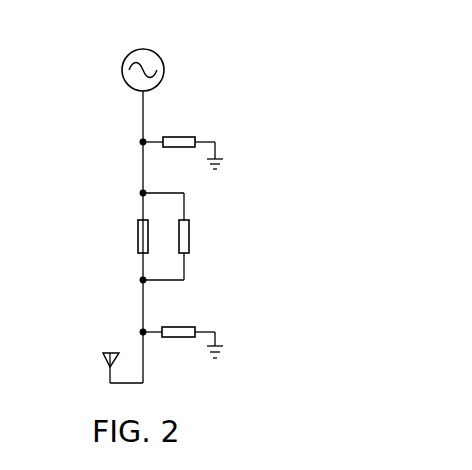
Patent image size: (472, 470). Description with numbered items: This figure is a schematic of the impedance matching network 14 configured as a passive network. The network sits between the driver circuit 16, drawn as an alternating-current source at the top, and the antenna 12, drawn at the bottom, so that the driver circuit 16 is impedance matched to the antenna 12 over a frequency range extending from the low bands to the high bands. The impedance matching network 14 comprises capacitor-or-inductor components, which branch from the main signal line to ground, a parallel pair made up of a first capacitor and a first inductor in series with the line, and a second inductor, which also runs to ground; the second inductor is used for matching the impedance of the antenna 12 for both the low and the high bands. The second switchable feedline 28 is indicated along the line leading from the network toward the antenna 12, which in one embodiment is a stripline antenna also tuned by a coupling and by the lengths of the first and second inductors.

The driver circuit 16 is at (130, 55).
The impedance matching network 14 is at (285, 95).
The second switchable feedline 28 is at (141, 306).
The antenna 12 is at (103, 357).